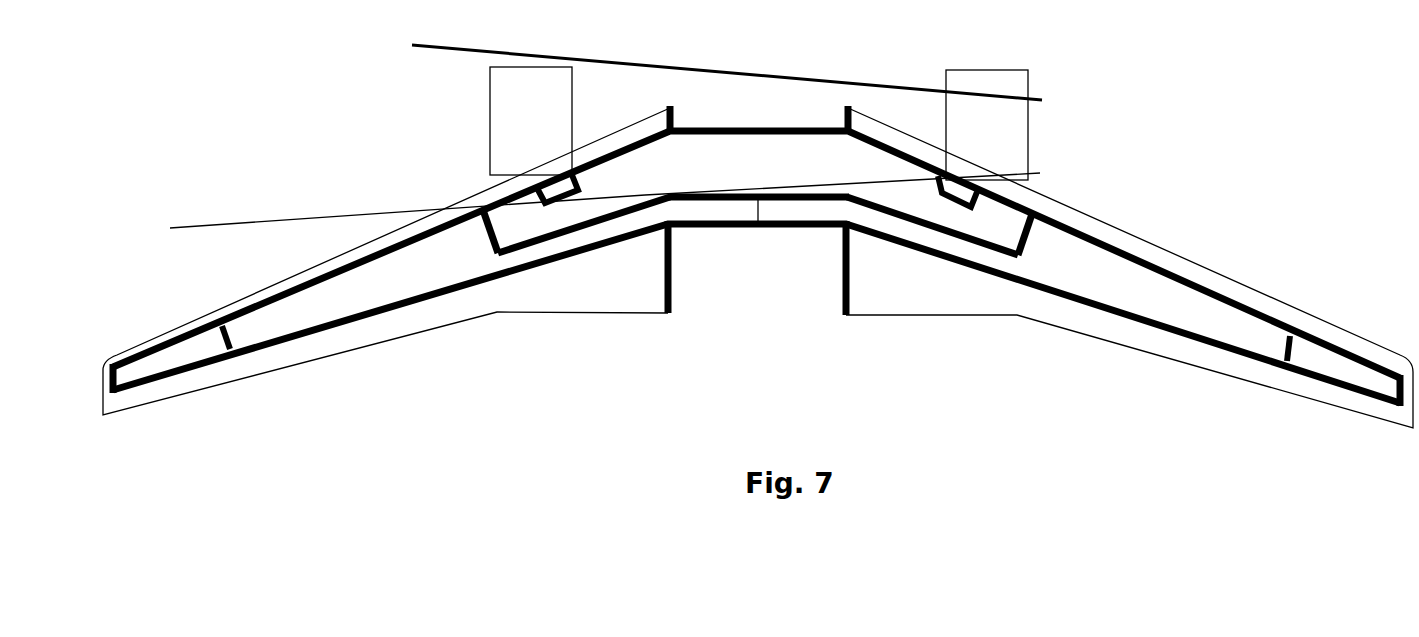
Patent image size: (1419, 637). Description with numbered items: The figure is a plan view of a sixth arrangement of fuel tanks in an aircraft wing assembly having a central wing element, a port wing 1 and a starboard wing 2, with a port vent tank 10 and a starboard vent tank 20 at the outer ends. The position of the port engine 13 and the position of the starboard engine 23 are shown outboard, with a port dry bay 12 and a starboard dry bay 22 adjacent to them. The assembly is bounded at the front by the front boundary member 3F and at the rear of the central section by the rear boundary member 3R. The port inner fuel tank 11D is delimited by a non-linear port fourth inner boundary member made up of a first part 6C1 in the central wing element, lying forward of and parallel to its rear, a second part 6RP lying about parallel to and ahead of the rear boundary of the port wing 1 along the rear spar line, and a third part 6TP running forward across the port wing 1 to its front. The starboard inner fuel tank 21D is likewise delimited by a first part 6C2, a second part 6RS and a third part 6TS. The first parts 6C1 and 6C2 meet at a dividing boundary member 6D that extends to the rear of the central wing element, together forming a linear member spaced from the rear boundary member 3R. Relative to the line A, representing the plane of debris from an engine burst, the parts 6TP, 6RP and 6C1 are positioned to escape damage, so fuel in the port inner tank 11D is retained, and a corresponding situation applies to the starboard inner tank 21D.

The port wing 1 is at (353, 353).
The starboard wing 2 is at (1175, 358).
The port vent tank 10 is at (172, 357).
The starboard vent tank 20 is at (1325, 358).
The port inner fuel tank 11D is at (287, 312).
The starboard inner fuel tank 21D is at (1177, 303).
The port dry bay 12 is at (563, 195).
The starboard dry bay 22 is at (1000, 193).
The port engine position 13 is at (488, 107).
The starboard engine position 23 is at (1028, 132).
The front boundary member 3F is at (682, 127).
The rear boundary member 3R is at (733, 228).
The third part of port fourth inner boundary member 6TP is at (487, 233).
The second part of port fourth inner boundary member 6RP is at (542, 242).
The third part of starboard fourth inner boundary member 6TS is at (1028, 238).
The second part of starboard fourth inner boundary member 6RS is at (958, 240).
The first part of port fourth inner boundary member 6C1 is at (698, 200).
The first part of starboard fourth inner boundary member 6C2 is at (817, 200).
The dividing boundary member 6D is at (760, 210).
The line AA A is at (605, 189).